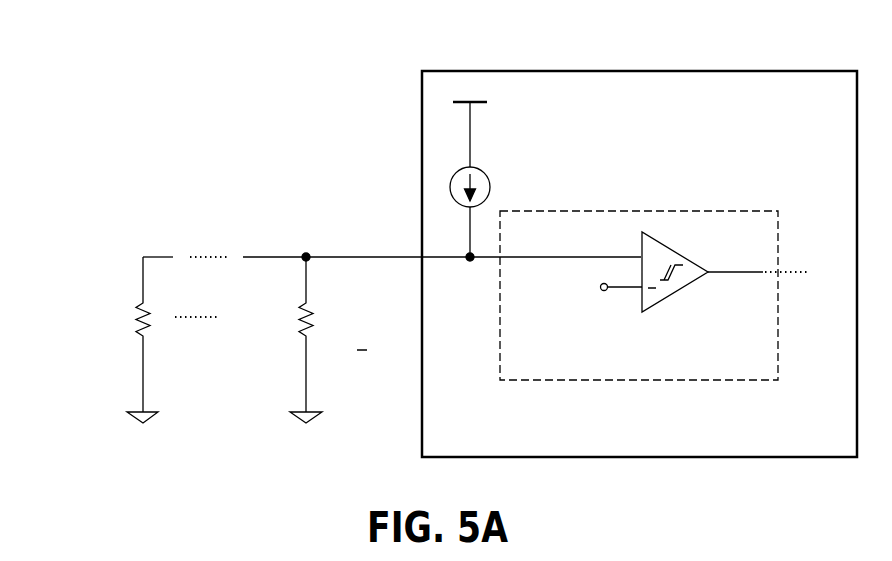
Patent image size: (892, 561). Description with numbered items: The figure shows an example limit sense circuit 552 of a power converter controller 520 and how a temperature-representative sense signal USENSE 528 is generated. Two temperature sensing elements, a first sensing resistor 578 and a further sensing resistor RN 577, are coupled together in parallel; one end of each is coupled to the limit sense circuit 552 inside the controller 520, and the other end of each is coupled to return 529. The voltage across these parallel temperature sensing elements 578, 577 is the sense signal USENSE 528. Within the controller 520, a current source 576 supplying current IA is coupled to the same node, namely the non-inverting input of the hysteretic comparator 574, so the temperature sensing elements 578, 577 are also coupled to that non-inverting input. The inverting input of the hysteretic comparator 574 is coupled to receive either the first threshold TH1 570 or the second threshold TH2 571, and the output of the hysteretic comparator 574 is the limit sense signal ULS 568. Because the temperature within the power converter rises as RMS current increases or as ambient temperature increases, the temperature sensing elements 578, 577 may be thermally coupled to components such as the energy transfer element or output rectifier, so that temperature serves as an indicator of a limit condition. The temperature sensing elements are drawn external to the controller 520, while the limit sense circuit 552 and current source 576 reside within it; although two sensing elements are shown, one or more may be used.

The temperature sensing element RN 577 is at (68, 298).
The temperature sensing element R1 578 is at (255, 305).
The return 529 is at (157, 425).
The sense signal USENSE 528 is at (360, 370).
The current source 576 is at (438, 193).
The hysteretic comparator 574 is at (680, 243).
The first threshold TH1 570 is at (573, 312).
The second threshold TH2 571 is at (551, 302).
The limit sense signal ULS 568 is at (817, 284).
The limit sense circuit 552 is at (560, 395).
The controller 520 is at (738, 473).